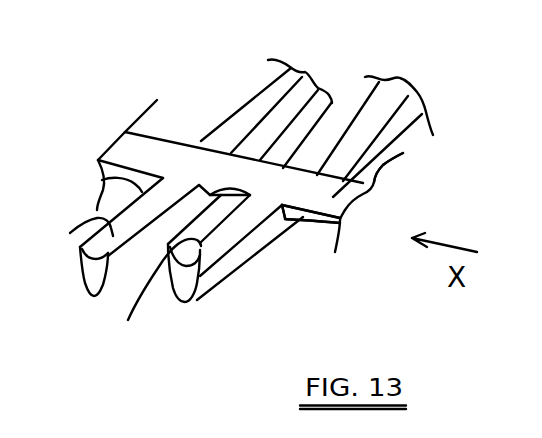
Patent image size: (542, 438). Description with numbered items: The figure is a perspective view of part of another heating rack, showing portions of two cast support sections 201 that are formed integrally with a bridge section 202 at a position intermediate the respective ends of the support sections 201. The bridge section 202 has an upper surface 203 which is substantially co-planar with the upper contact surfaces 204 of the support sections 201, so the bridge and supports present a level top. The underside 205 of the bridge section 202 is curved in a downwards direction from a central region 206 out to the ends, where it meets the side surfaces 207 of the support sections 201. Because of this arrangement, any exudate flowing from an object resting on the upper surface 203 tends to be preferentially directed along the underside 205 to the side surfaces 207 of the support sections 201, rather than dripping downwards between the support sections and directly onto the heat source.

The cast support section 201 is at (385, 96).
The bridge section 202 is at (148, 150).
The upper surface 203 is at (403, 154).
The contact surface 204 is at (70, 233).
The underside 205 is at (308, 218).
The central region 206 is at (320, 222).
The side surface 207 is at (216, 270).